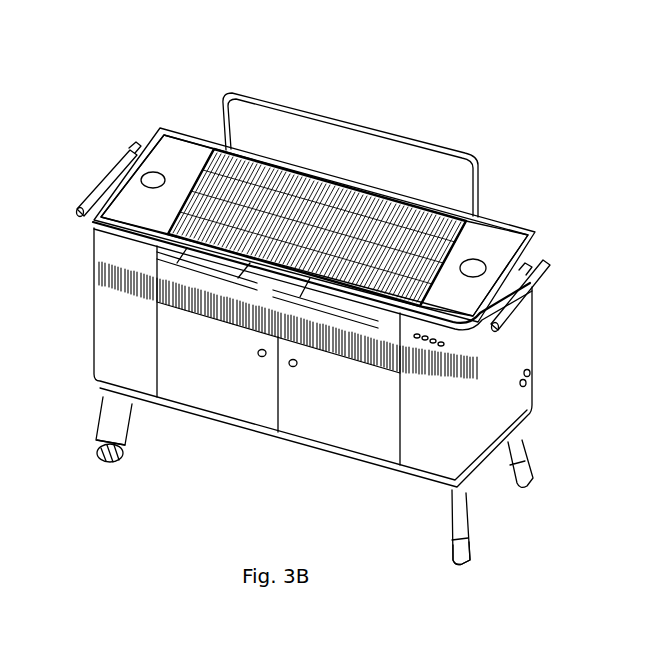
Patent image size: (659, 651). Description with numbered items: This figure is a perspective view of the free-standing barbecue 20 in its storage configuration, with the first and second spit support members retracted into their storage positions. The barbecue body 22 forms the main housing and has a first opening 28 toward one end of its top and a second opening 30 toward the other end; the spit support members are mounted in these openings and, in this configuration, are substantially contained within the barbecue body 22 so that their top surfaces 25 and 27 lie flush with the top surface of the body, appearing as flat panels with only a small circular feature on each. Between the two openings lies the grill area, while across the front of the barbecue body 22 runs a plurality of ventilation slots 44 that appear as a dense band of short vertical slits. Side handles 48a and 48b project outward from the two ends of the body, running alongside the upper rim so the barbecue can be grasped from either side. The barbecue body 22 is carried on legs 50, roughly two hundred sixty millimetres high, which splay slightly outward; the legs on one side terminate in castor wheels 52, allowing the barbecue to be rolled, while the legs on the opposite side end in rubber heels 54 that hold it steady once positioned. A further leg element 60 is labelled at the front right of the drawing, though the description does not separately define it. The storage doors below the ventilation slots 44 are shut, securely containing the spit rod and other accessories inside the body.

The barbecue 20 is at (422, 88).
The barbecue body 22 is at (515, 343).
The top surface of first spit support member 25 is at (153, 180).
The top surface of second spit support member 27 is at (472, 268).
The first opening 28 is at (133, 152).
The second opening 30 is at (490, 262).
The ventilation slots 44 is at (477, 378).
The side handle 48a is at (100, 190).
The side handle 48b is at (537, 280).
The legs 50 is at (117, 414).
The castor wheels 52 is at (103, 458).
The rubber heels 54 is at (470, 552).
The leg 60 is at (453, 513).